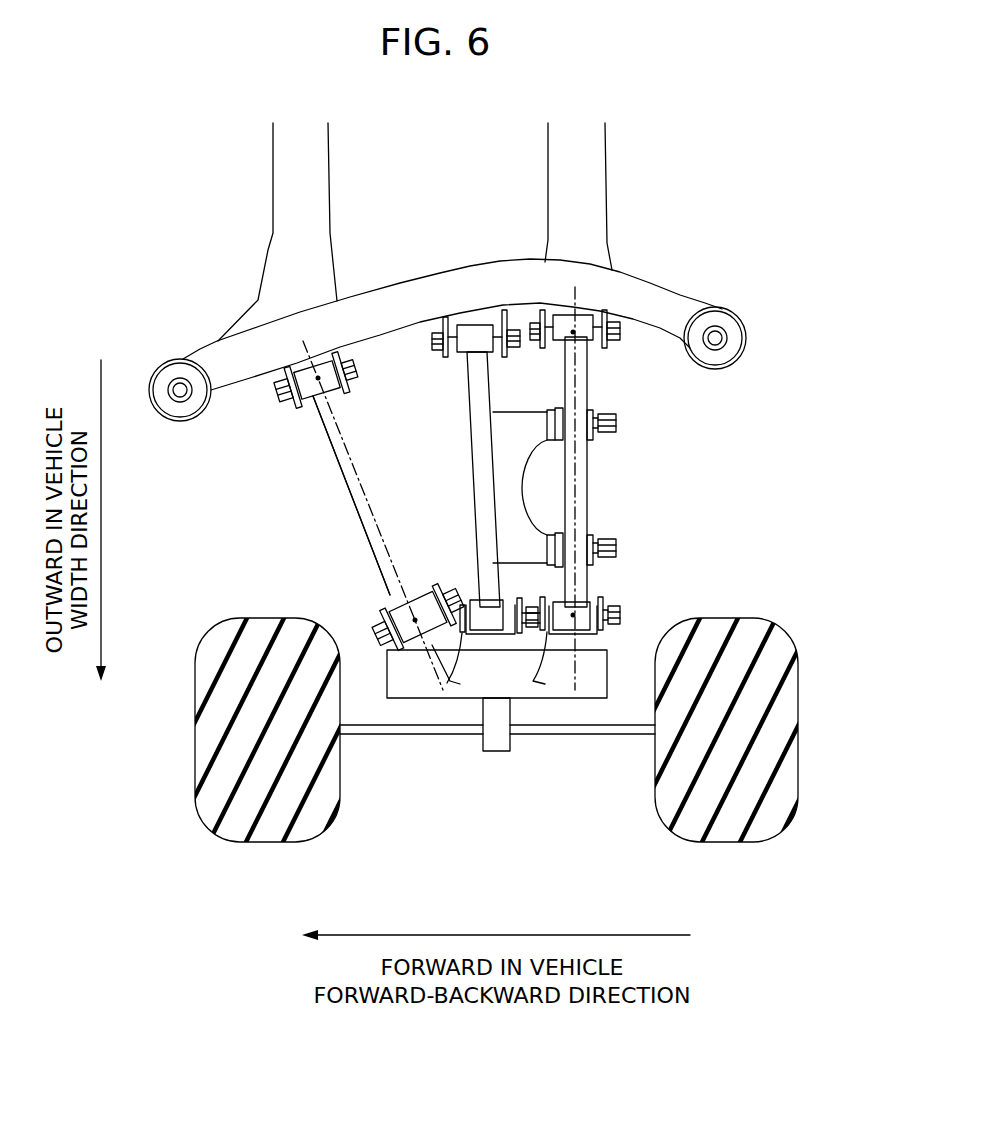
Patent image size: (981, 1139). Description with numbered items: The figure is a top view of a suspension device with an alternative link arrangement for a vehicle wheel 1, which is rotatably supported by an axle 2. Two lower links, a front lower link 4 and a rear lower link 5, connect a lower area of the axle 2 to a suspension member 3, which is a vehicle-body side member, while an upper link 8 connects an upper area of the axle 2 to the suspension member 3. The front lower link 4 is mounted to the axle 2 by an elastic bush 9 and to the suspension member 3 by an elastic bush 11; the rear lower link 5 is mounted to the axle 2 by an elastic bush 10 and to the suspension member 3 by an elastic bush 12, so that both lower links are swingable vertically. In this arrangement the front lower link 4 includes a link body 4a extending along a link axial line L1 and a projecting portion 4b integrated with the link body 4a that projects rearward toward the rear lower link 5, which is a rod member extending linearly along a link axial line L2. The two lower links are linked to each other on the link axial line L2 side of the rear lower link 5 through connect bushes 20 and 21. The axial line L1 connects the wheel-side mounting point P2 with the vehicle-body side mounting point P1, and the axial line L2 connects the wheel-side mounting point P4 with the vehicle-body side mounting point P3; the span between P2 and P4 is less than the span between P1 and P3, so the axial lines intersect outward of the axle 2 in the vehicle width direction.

The wheel 1 is at (778, 766).
The axle 2 is at (573, 687).
The suspension member 3 is at (466, 290).
The front lower link 4 is at (340, 495).
The link body 4a is at (360, 490).
The projecting portion 4b is at (427, 502).
The rear lower link 5 is at (580, 460).
The upper link 8 is at (477, 395).
The elastic bush 9 is at (418, 607).
The elastic bush 10 is at (590, 598).
The elastic bush 11 is at (303, 400).
The elastic bush 12 is at (563, 332).
The connect bush 20 is at (588, 535).
The connect bush 21 is at (587, 411).
The link axial line L1 is at (338, 455).
The link axial line L2 is at (577, 487).
The vehicle-body side mounting point P1 is at (318, 378).
The wheel-side mounting point P2 is at (415, 620).
The vehicle-body side mounting point P3 is at (573, 332).
The wheel-side mounting point P4 is at (573, 615).